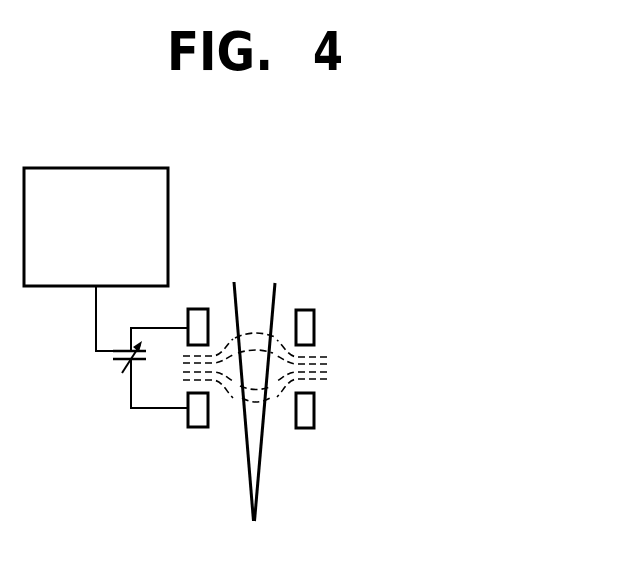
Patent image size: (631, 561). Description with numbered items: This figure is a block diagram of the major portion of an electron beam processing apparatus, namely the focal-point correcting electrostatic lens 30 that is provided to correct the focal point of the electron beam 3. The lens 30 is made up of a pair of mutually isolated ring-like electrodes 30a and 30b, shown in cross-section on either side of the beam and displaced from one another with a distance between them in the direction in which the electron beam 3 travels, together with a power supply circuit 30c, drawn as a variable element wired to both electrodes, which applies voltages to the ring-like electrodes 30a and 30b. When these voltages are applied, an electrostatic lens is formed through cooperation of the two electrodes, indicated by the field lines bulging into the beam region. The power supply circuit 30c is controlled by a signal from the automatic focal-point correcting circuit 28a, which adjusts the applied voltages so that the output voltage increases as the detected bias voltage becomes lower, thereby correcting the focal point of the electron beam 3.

The automatic focal-point correcting circuit 28a is at (168, 238).
The power supply circuit 30c is at (121, 368).
The electron beam 3 is at (276, 287).
The focal-point correcting electrostatic lens 30 is at (390, 351).
The ring-like electrode 30a is at (314, 322).
The ring-like electrode 30b is at (314, 410).